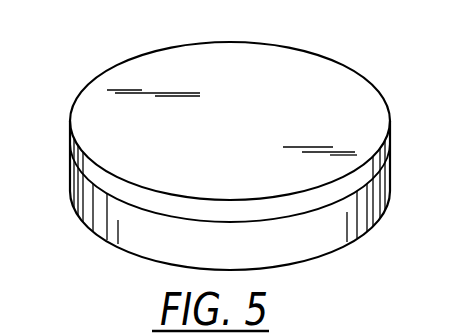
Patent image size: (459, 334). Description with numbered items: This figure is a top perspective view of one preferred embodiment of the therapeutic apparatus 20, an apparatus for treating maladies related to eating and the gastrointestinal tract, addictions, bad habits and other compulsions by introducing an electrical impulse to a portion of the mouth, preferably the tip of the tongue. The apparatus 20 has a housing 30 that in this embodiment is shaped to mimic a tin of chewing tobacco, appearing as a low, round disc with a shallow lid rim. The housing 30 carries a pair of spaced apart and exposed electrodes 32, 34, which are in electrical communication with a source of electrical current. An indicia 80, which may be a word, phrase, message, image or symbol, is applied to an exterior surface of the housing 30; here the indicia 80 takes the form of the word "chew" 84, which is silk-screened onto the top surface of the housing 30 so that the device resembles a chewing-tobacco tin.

The therapeutic apparatus 20 is at (116, 265).
The housing 30 is at (355, 112).
The electrode 32 is at (222, 118).
The electrode 34 is at (251, 110).
The indicia 80 is at (162, 92).
The word "chew" 84 is at (149, 109).